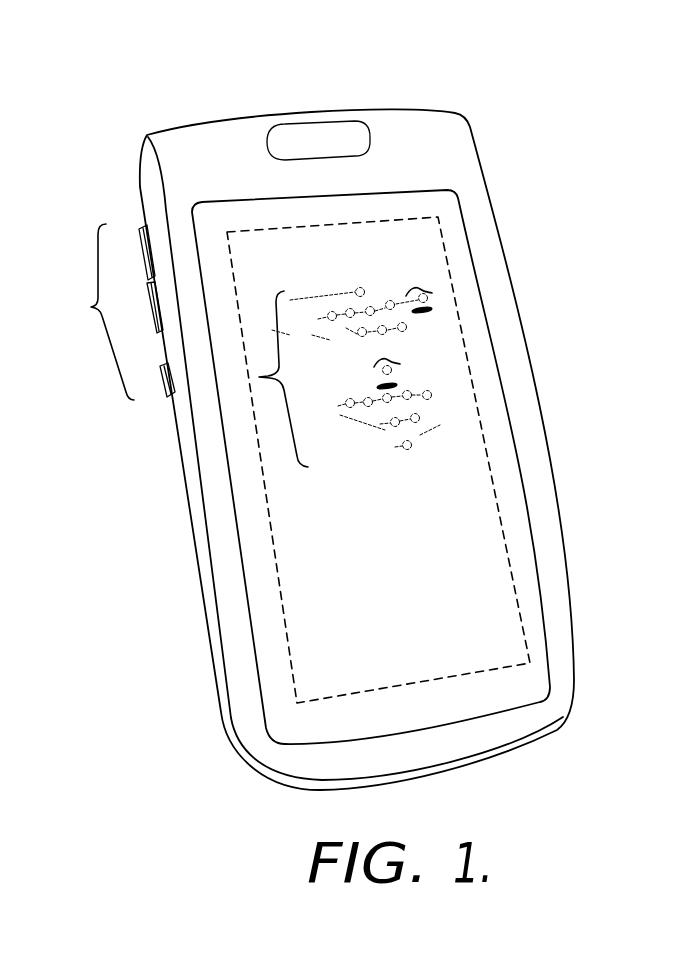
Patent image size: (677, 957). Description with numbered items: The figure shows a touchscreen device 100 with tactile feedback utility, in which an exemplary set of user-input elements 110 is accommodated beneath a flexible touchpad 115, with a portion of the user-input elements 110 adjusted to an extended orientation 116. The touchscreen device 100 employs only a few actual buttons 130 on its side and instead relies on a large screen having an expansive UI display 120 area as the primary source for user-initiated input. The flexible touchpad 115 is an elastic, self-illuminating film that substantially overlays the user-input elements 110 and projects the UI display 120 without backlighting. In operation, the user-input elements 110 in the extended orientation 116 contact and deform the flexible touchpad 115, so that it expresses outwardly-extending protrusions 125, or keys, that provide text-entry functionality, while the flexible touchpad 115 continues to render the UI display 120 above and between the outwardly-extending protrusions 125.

The touchscreen device 100 is at (131, 119).
The user-input elements 110 is at (259, 377).
The flexible touchpad 115 is at (456, 519).
The extended orientation 116 is at (407, 296).
The UI display 120 is at (524, 620).
The outwardly-extending protrusions 125 is at (405, 370).
The buttons 130 is at (110, 312).